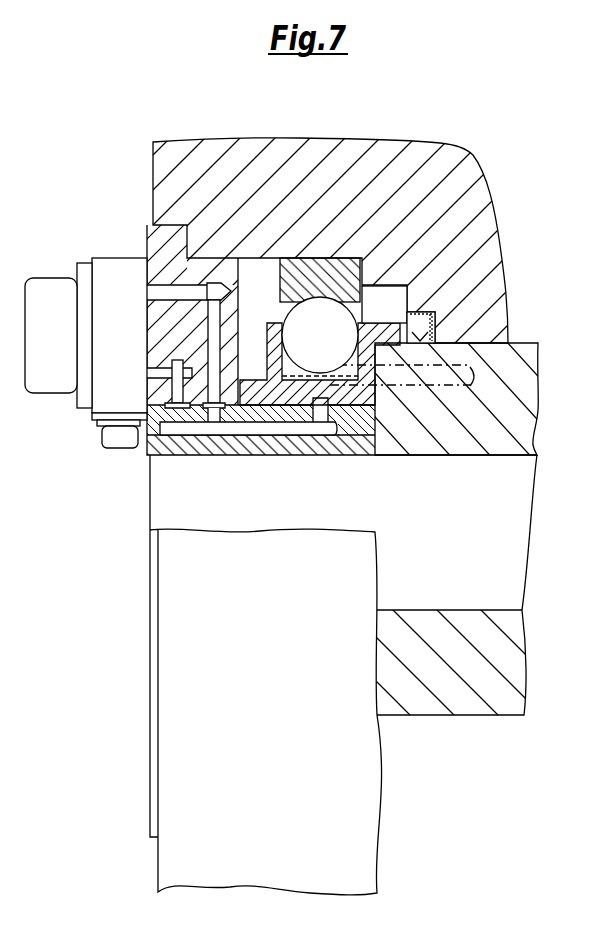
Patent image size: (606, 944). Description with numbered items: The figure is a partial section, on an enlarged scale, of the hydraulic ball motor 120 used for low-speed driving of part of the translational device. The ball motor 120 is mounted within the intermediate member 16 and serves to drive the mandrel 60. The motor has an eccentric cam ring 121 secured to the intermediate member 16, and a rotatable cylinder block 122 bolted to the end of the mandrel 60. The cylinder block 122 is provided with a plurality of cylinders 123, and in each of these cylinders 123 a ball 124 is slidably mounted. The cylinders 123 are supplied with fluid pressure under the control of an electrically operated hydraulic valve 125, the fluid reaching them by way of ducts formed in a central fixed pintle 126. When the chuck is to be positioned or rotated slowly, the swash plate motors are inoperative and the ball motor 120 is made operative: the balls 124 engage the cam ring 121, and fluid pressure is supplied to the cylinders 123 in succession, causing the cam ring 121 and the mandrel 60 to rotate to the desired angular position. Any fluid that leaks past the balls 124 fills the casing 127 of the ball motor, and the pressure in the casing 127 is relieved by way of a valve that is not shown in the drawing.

The intermediate member 16 is at (498, 316).
The mandrel 60 is at (521, 423).
The ball motor 120 is at (264, 461).
The eccentric cam ring 121 is at (304, 268).
The rotatable cylinder block 122 is at (365, 395).
The cylinders 123 is at (359, 365).
The balls 124 is at (326, 333).
The electrically operated hydraulic valve 125 is at (132, 346).
The central fixed pintle 126 is at (306, 452).
The casing 127 is at (394, 314).